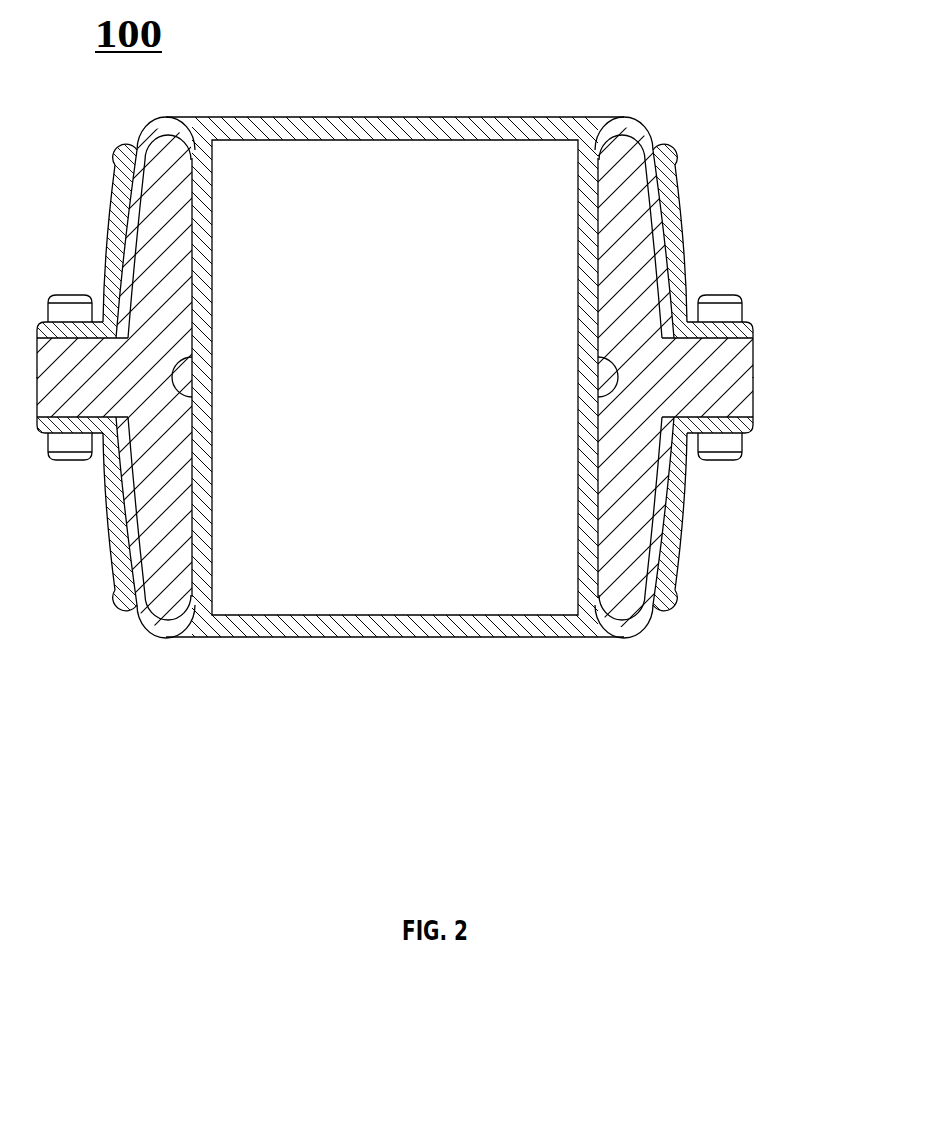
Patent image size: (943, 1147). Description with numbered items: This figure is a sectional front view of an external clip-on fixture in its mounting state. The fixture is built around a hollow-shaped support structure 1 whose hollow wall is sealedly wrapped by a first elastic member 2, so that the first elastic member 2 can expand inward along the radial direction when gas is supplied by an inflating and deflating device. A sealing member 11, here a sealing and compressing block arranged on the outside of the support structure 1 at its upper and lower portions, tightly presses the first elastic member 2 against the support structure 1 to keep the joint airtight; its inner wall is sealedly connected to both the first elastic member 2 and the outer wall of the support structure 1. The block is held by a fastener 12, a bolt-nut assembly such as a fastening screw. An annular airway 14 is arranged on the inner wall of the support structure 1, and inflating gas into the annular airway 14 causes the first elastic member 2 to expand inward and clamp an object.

The support structure 1 is at (180, 227).
The first elastic member 2 is at (205, 510).
The sealing member 11 is at (668, 193).
The fastener 12 is at (715, 313).
The annular airway 14 is at (605, 377).